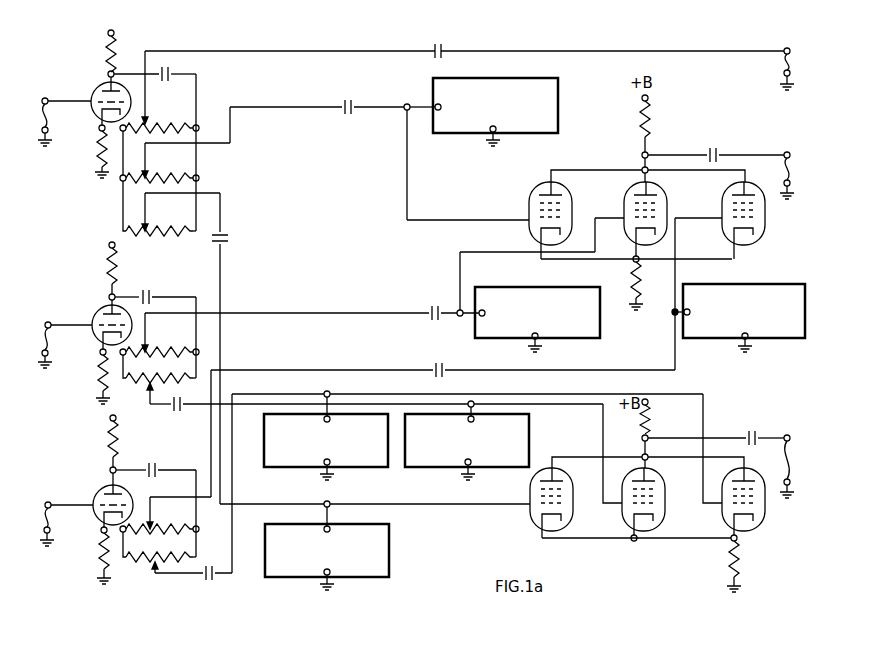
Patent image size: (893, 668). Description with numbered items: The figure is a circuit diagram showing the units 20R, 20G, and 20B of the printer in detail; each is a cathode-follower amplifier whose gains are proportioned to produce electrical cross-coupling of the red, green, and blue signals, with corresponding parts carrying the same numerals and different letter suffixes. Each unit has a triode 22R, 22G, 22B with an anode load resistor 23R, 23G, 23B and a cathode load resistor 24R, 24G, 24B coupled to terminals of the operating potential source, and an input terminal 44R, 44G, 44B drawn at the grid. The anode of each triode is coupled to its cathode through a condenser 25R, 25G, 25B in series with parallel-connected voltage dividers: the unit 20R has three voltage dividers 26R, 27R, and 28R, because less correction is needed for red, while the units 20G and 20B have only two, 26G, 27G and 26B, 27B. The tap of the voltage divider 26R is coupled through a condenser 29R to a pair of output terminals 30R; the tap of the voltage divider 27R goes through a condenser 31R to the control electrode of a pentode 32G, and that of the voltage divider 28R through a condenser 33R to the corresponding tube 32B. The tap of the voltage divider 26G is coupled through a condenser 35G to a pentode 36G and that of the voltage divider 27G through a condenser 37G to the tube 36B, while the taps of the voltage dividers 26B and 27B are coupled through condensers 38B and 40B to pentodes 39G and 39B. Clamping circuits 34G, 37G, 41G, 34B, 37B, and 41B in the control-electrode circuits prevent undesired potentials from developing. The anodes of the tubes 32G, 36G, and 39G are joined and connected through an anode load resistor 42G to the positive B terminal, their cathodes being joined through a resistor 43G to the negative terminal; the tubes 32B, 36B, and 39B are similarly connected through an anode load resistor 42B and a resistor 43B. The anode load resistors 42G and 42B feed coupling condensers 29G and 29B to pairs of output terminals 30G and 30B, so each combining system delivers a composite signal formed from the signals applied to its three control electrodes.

The unit 20R is at (90, 221).
The unit 20G is at (93, 373).
The unit 20B is at (83, 578).
The triode 22R is at (101, 83).
The triode 22G is at (101, 306).
The triode 22B is at (102, 495).
The anode load resistor 23R is at (117, 57).
The anode load resistor 23G is at (115, 270).
The anode load resistor 23B is at (109, 443).
The cathode load resistor 24R is at (99, 151).
The cathode load resistor 24G is at (99, 381).
The cathode load resistor 24B is at (100, 551).
The condenser 25R is at (164, 67).
The condenser 25G is at (144, 290).
The condenser 25B is at (151, 464).
The voltage divider 26R is at (159, 121).
The voltage divider 26G is at (159, 339).
The voltage divider 26B is at (159, 519).
The voltage divider 27R is at (159, 167).
The voltage divider 27G is at (154, 379).
The voltage divider 27B is at (159, 552).
The voltage divider 28R is at (159, 218).
The condenser 29R is at (464, 59).
The coupling condenser 29G is at (711, 148).
The coupling condenser 29B is at (751, 431).
The output terminals 30R is at (802, 69).
The output terminals 30G is at (803, 175).
The output terminals 30B is at (794, 466).
The condenser 31R is at (351, 84).
The condenser 33R is at (268, 367).
The clamping circuit 34G is at (512, 78).
The clamping circuit 34B is at (389, 542).
The condenser 35G is at (432, 306).
The condenser / clamping circuit 37G is at (492, 287).
The clamping circuit 37B is at (550, 435).
The condenser 38B is at (443, 360).
The condenser 40B is at (207, 565).
The clamping circuit 41G is at (769, 284).
The clamping circuit 41B is at (264, 451).
The anode load resistor 42G is at (648, 127).
The anode load resistor 42B is at (660, 417).
The resistor 43G is at (632, 280).
The resistor 43B is at (736, 567).
The pentode 32G is at (531, 198).
The pentode 36G is at (626, 198).
The pentode 39G is at (724, 198).
The tube 32B is at (530, 521).
The tube 36B is at (623, 520).
The pentode 39B is at (723, 523).
The input terminal 44R is at (64, 122).
The input terminal 44G is at (65, 345).
The input terminal 44B is at (66, 524).